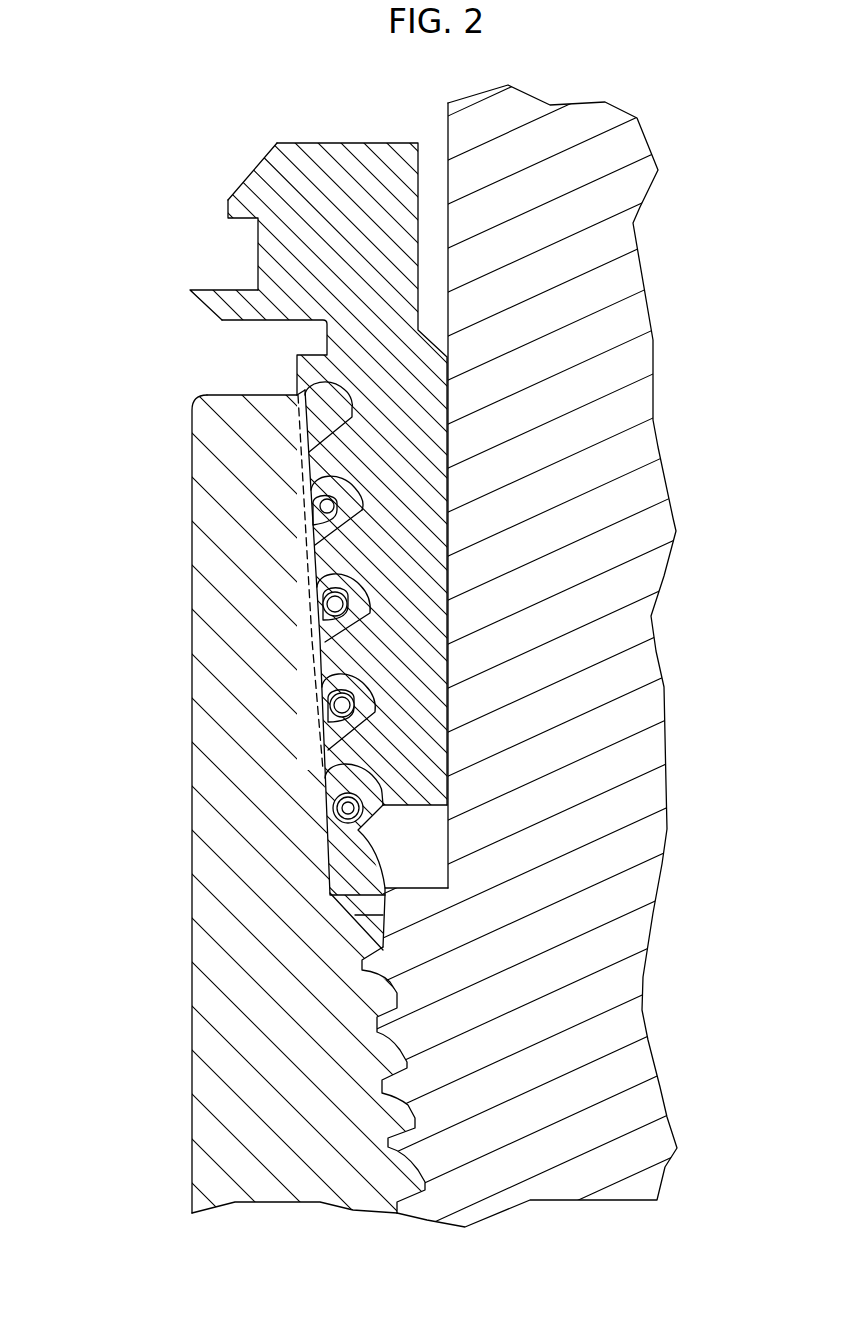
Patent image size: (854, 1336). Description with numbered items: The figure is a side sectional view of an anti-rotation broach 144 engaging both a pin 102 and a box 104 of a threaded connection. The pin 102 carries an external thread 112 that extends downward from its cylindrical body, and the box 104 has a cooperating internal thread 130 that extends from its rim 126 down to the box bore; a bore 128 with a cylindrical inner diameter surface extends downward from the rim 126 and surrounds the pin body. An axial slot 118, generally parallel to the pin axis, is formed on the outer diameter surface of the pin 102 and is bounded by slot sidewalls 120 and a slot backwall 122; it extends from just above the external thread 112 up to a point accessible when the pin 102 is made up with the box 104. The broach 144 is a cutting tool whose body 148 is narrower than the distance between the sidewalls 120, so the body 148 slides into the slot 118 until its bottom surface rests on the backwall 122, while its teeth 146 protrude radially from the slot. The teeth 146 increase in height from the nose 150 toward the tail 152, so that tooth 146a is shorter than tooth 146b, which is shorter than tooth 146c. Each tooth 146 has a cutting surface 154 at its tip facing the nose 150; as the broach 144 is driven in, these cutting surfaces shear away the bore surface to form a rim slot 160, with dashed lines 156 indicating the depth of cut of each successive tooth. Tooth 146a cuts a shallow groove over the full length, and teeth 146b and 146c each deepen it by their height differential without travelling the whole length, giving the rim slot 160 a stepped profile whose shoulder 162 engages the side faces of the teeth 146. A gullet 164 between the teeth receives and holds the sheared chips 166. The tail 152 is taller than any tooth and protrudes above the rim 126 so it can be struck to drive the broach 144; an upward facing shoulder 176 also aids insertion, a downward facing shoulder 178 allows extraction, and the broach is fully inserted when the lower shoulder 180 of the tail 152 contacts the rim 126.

The pin 102 is at (592, 248).
The box 104 is at (262, 608).
The external thread 112 is at (372, 1092).
The axial slot 118 is at (413, 893).
The slot sidewalls 120 is at (390, 847).
The slot backwall 122 is at (423, 862).
The rim 126 is at (242, 395).
The bore 128 is at (355, 855).
The internal thread 130 is at (398, 1003).
The broach 144 is at (276, 489).
The teeth 146 is at (340, 487).
The tooth 146a is at (330, 772).
The tooth 146b is at (332, 677).
The tooth 146c is at (327, 590).
The body 148 is at (418, 418).
The nose 150 is at (420, 812).
The tail 152 is at (343, 160).
The cutting surface 154 is at (336, 514).
The dashed lines 156 is at (327, 730).
The rim slot 160 is at (316, 428).
The shoulder 162 is at (320, 525).
The gullet 164 is at (356, 498).
The chips 166 is at (350, 602).
The upward facing shoulder 176 is at (212, 296).
The downward facing shoulder 178 is at (240, 222).
The lower shoulder 180 is at (242, 322).